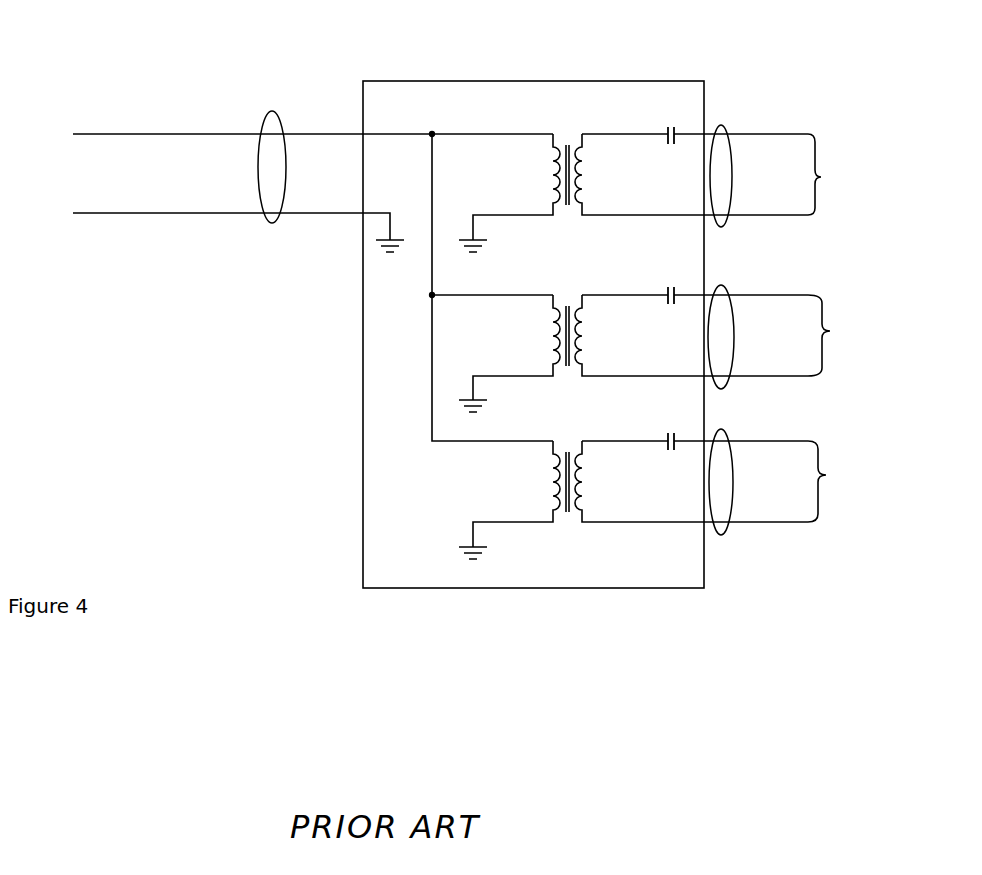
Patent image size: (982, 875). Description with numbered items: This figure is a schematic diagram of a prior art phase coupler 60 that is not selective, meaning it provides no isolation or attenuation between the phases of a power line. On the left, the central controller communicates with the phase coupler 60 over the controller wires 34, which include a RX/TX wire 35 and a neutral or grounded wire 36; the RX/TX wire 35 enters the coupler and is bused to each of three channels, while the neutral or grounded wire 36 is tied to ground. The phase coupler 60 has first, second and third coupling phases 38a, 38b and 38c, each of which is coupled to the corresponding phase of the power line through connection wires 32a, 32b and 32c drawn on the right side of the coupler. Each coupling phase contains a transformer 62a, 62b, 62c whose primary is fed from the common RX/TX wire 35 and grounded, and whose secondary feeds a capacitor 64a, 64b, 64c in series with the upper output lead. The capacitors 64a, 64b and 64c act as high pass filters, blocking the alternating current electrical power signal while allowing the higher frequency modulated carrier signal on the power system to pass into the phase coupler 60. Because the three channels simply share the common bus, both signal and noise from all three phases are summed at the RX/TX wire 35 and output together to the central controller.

The controller wires 34 is at (274, 112).
The RX/TX wire 35 is at (173, 134).
The neutral or grounded wire 36 is at (185, 213).
The phase coupler 60 is at (704, 82).
The transformer 62a is at (578, 188).
The transformer 62b is at (580, 341).
The transformer 62c is at (582, 489).
The capacitor 64a is at (670, 120).
The capacitor 64b is at (670, 280).
The capacitor 64c is at (670, 426).
The connection wire 32a is at (722, 125).
The connection wire 32b is at (723, 287).
The connection wire 32c is at (730, 535).
The first coupling phase 38a is at (836, 174).
The second coupling phase 38b is at (841, 335).
The third coupling phase 38c is at (837, 481).